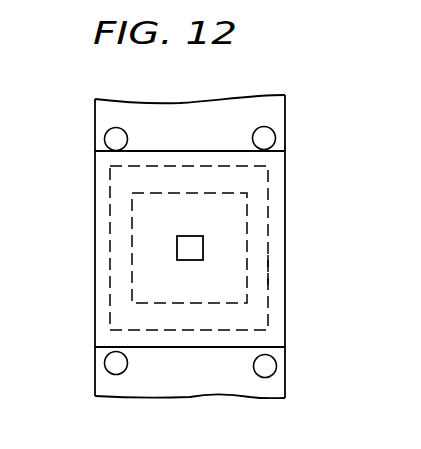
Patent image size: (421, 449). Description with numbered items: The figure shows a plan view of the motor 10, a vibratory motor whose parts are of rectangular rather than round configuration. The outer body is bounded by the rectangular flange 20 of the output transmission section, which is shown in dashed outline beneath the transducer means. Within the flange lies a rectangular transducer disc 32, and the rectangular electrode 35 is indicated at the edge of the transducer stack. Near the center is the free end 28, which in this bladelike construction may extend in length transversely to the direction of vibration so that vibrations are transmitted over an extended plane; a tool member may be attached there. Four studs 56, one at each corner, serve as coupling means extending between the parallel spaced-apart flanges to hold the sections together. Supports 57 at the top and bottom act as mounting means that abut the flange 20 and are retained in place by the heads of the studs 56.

The motor 10 is at (288, 188).
The supports 57 is at (282, 105).
The studs 56 is at (112, 139).
The flange 20 is at (105, 164).
The disc 32 is at (248, 227).
The electrode 35 is at (268, 268).
The free end 28 is at (177, 244).